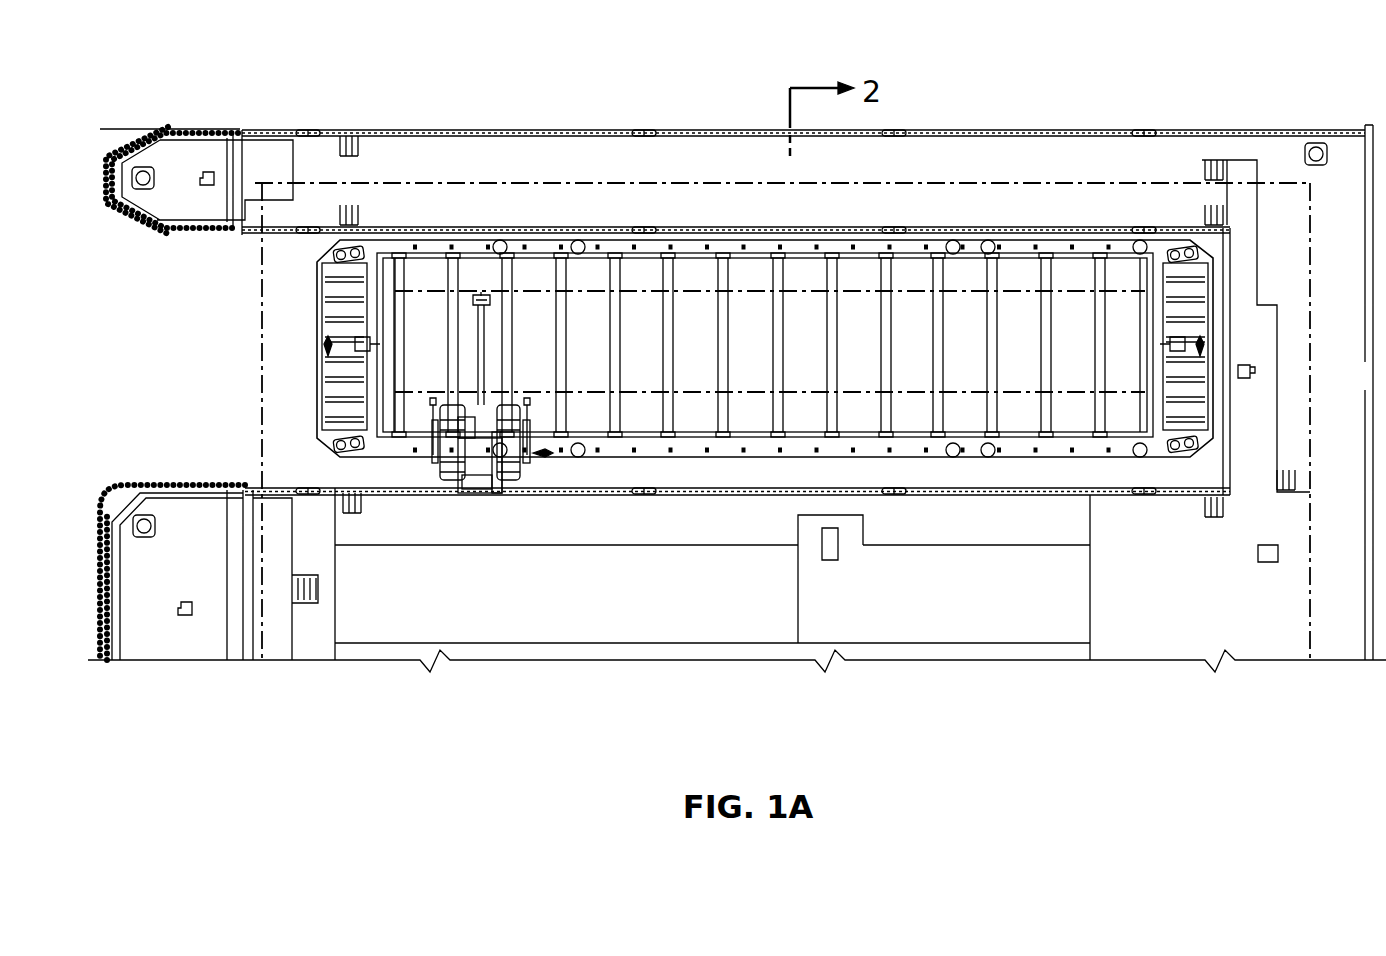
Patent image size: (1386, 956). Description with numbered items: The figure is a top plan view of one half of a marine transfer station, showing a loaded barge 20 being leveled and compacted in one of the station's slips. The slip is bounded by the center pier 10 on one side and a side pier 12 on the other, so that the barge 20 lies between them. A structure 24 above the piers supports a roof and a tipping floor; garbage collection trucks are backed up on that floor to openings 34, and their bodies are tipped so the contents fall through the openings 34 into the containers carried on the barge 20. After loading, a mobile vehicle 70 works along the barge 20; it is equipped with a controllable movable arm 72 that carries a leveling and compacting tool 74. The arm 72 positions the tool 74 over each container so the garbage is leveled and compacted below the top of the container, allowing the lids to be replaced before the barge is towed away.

The center pier 10 is at (603, 599).
The side pier 12 is at (670, 150).
The barge 20 is at (303, 328).
The structure 24 is at (1262, 184).
The opening 34 is at (764, 366).
The mobile vehicle 70 is at (470, 468).
The controllable moveable arm 72 is at (483, 348).
The leveling and compacting tool 74 is at (468, 296).